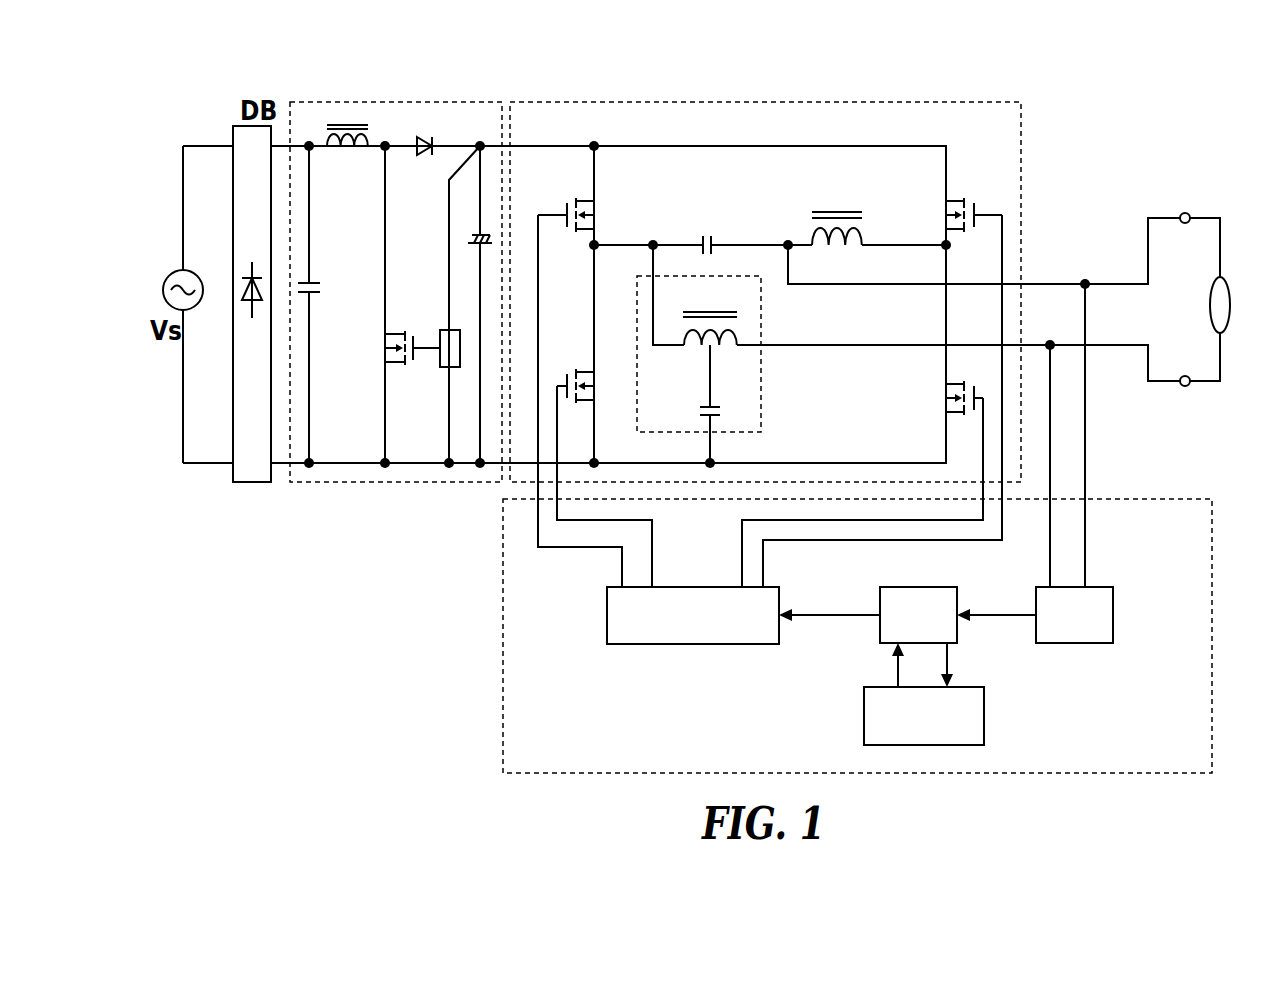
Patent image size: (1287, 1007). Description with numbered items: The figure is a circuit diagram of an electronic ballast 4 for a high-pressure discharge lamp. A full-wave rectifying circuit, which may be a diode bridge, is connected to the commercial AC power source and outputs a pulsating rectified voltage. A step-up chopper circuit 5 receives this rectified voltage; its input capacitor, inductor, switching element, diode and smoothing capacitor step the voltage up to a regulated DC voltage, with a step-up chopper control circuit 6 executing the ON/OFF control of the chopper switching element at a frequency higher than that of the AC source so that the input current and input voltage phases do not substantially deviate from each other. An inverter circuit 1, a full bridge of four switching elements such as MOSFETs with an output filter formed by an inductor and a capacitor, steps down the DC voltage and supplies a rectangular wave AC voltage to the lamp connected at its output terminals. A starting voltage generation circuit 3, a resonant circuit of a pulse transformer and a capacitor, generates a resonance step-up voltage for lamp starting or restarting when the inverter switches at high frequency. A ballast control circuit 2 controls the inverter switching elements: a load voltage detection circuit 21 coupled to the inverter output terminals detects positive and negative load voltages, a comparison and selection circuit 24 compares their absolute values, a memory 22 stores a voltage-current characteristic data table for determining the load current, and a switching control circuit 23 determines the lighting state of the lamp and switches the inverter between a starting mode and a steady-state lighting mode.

The inverter circuit 1 is at (790, 102).
The ballast control circuit 2 is at (503, 702).
The starting voltage generation circuit 3 is at (762, 387).
The ballast 4 is at (228, 48).
The step-up chopper circuit 5 is at (325, 102).
The step-up chopper control circuit 6 is at (444, 367).
The load voltage detection circuit 21 is at (1097, 587).
The memory 22 is at (984, 720).
The switching control circuit 23 is at (695, 587).
The comparison and selection circuit 24 is at (905, 587).